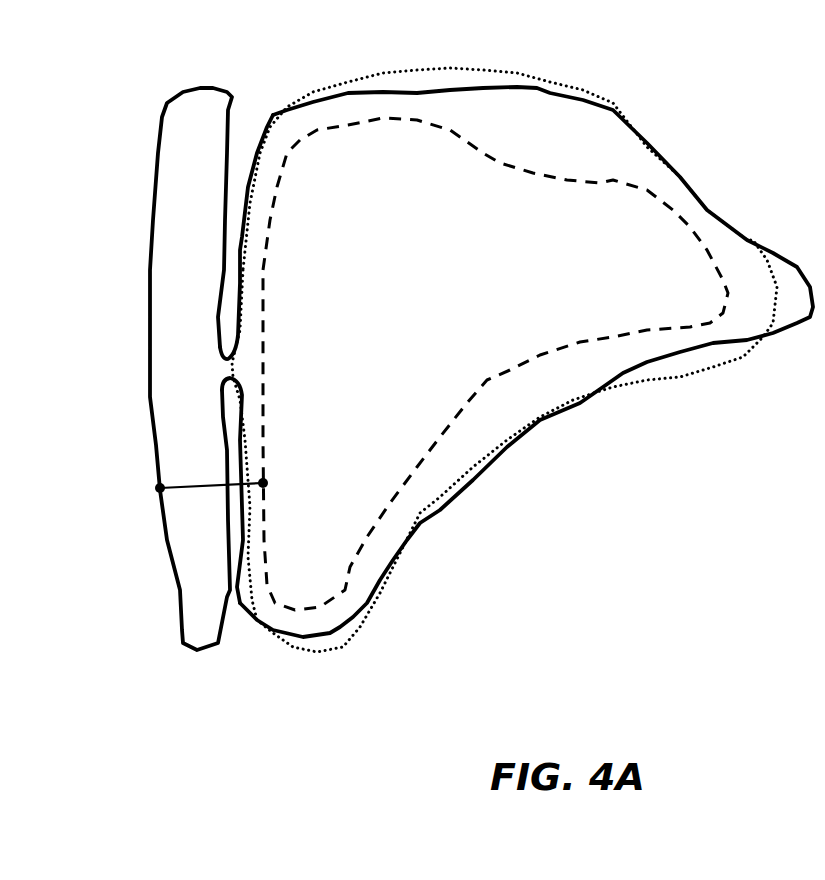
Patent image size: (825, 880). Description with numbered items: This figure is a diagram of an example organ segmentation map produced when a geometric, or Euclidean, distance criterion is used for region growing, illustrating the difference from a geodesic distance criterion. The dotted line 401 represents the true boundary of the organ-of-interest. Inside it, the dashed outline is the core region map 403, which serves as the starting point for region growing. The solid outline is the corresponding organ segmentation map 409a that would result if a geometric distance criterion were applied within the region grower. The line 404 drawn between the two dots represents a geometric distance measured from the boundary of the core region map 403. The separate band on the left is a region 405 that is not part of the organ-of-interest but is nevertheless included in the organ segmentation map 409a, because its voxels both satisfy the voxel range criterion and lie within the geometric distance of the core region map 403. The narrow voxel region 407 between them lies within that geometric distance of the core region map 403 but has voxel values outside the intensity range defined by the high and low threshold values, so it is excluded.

The true boundary of the organ-of-interest 401 is at (510, 72).
The core region map 403 is at (502, 163).
The geometric distance line 404 is at (160, 488).
The region not part of the organ-of-interest 405 is at (185, 138).
The voxel region 407 is at (245, 130).
The organ segmentation map 409a is at (677, 170).